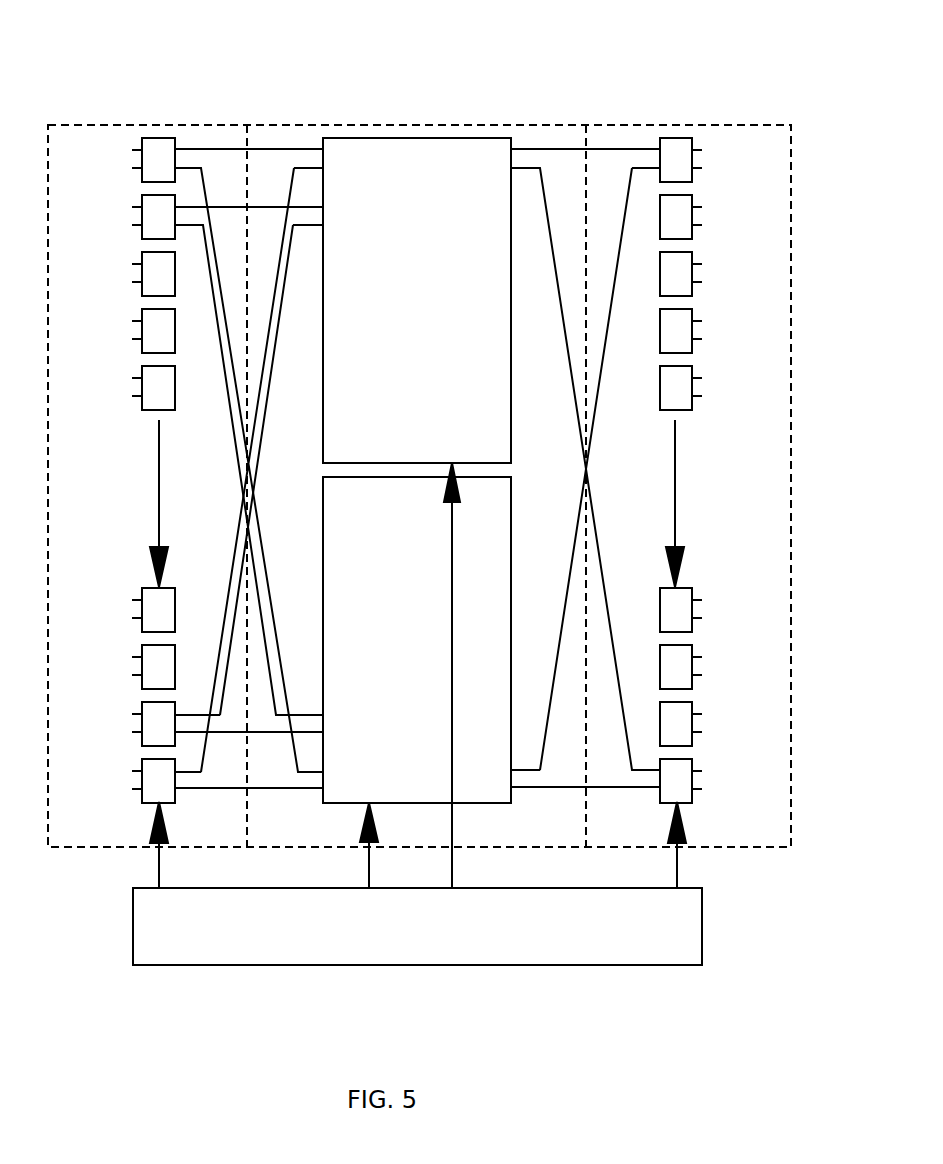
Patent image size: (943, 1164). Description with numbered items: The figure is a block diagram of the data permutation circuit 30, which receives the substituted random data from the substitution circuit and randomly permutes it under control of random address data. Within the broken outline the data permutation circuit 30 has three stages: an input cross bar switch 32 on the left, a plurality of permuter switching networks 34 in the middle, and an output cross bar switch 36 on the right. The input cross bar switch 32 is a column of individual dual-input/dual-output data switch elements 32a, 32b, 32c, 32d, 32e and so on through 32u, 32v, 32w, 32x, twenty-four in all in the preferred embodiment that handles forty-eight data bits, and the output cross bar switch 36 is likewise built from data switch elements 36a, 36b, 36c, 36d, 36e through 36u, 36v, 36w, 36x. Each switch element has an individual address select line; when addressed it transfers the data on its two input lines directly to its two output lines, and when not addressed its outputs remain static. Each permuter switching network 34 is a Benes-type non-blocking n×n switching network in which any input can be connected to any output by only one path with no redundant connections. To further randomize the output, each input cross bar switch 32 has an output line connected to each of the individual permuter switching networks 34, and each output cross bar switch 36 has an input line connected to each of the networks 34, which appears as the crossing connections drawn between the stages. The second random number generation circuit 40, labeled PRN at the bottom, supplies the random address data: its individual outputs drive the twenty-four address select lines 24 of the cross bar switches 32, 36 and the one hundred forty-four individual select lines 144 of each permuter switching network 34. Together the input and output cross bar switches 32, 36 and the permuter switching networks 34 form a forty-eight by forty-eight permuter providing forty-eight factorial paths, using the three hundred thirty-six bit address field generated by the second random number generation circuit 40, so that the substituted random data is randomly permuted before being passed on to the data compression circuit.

The data permutation circuit 30 is at (419, 92).
The input cross bar switch 32 is at (103, 142).
The data switch element 32a is at (149, 172).
The data switch element 32b is at (149, 229).
The data switch element 32c is at (149, 286).
The data switch element 32d is at (149, 343).
The data switch element 32e is at (149, 400).
The data switch element 32u is at (149, 622).
The data switch element 32v is at (149, 679).
The data switch element 32w is at (149, 736).
The data switch element 32x is at (149, 793).
The permuter switching network 34 is at (427, 310).
The output cross bar switch 36 is at (713, 140).
The data switch element 36a is at (683, 172).
The data switch element 36b is at (683, 229).
The data switch element 36c is at (683, 286).
The data switch element 36d is at (683, 343).
The data switch element 36e is at (683, 400).
The data switch element 36u is at (683, 622).
The data switch element 36v is at (683, 679).
The data switch element 36w is at (683, 736).
The data switch element 36x is at (683, 793).
The second random number generation circuit 40 is at (692, 930).
The control signal line 24 is at (175, 855).
The control signal line 144 is at (385, 855).